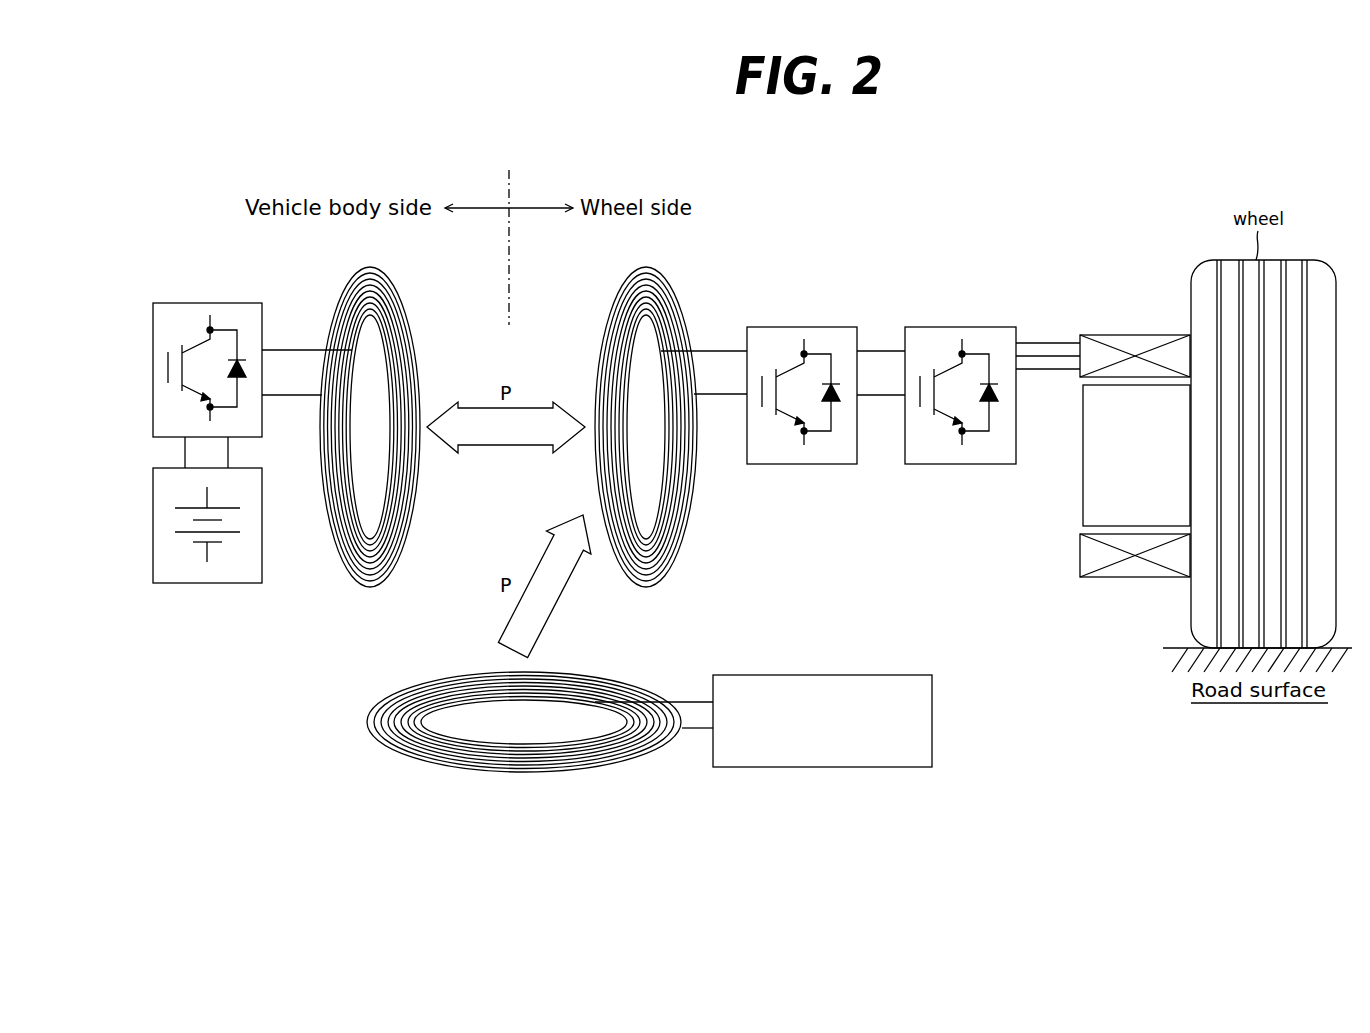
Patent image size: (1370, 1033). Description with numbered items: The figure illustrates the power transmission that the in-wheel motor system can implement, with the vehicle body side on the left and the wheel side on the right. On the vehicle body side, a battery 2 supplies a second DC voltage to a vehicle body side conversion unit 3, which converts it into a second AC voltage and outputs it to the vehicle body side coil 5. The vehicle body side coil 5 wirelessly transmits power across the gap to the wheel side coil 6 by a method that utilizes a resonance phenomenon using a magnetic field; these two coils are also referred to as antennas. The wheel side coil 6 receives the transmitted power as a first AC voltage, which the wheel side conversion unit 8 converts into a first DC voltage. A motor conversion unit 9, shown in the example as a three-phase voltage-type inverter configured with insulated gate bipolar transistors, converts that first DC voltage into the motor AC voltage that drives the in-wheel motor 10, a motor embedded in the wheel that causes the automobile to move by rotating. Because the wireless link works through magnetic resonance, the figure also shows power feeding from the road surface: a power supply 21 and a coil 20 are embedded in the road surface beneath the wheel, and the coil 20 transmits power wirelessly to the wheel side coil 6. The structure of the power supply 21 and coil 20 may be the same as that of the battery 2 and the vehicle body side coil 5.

The battery 2 is at (208, 583).
The vehicle body side conversion unit 3 is at (208, 303).
The vehicle body side coil 5 is at (410, 330).
The wheel side coil 6 is at (605, 324).
The wheel side conversion unit 8 is at (801, 327).
The motor conversion unit 9 is at (961, 327).
The in-wheel motor 10 is at (1131, 335).
The coil 20 is at (527, 773).
The power supply 21 is at (819, 675).